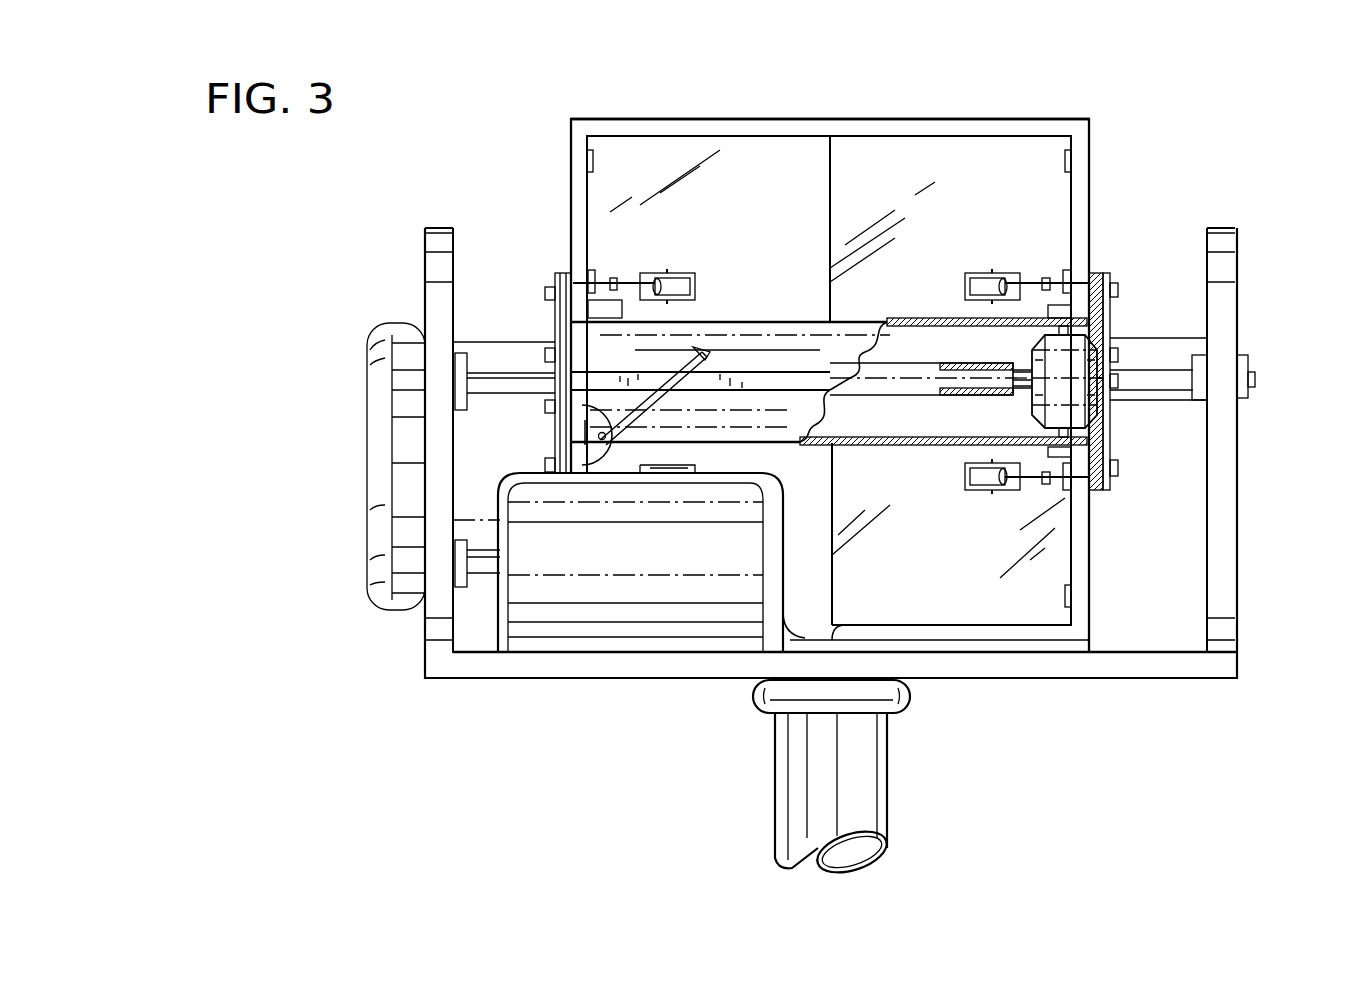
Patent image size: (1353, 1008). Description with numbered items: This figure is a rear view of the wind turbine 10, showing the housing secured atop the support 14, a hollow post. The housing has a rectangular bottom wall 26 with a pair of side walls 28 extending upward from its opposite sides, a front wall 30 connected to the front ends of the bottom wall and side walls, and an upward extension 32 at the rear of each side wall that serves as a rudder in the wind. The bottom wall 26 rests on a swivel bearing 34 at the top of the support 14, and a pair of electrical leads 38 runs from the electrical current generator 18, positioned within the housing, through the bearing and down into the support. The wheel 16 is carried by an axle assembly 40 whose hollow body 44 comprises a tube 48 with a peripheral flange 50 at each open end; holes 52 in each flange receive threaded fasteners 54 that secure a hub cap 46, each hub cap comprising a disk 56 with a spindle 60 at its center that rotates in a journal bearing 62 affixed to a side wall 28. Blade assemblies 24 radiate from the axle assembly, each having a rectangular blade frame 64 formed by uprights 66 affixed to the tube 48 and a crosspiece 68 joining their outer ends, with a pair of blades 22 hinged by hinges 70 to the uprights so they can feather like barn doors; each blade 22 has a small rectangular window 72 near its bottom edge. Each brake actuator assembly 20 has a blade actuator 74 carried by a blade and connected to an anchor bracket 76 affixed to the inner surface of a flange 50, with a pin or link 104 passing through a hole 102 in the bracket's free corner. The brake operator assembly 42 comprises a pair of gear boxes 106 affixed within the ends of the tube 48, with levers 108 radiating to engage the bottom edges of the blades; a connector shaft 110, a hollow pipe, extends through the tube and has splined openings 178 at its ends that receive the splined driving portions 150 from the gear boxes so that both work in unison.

The wind turbine 10 is at (445, 130).
The support 14 is at (885, 822).
The wheel 16 is at (630, 120).
The electrical current generator 18 is at (572, 632).
The brake actuator assembly 20 is at (715, 230).
The blade 22 is at (832, 150).
The blade assembly 24 is at (935, 130).
The bottom wall 26 is at (1143, 668).
The side wall 28 is at (430, 262).
The front wall 30 is at (1192, 578).
The upward extension 32 is at (432, 228).
The swivel bearing 34 is at (905, 712).
The electrical leads 38 is at (832, 640).
The axle assembly 40 is at (800, 322).
The brake operator assembly 42 is at (915, 320).
The hollow body 44 is at (882, 445).
The hub cap 46 is at (552, 275).
The tube 48 is at (918, 448).
The peripheral flange 50 is at (568, 268).
The hole 52 is at (1112, 478).
The threaded fastener 54 is at (1120, 293).
The disk 56 is at (553, 452).
The spindle 60 is at (505, 360).
The journal bearing 62 is at (470, 395).
The blade frame 64 is at (1015, 130).
The upright 66 is at (580, 175).
The crosspiece 68 is at (735, 120).
The hinge 70 is at (592, 158).
The window 72 is at (665, 276).
The blade actuator 74 is at (700, 282).
The anchor bracket 76 is at (580, 277).
The hole 102 is at (606, 445).
The pin or link 104 is at (612, 283).
The gear box 106 is at (1030, 347).
The lever 108 is at (622, 310).
The connector shaft 110 is at (900, 382).
The driving portion 150 is at (1018, 392).
The opening 178 is at (960, 392).